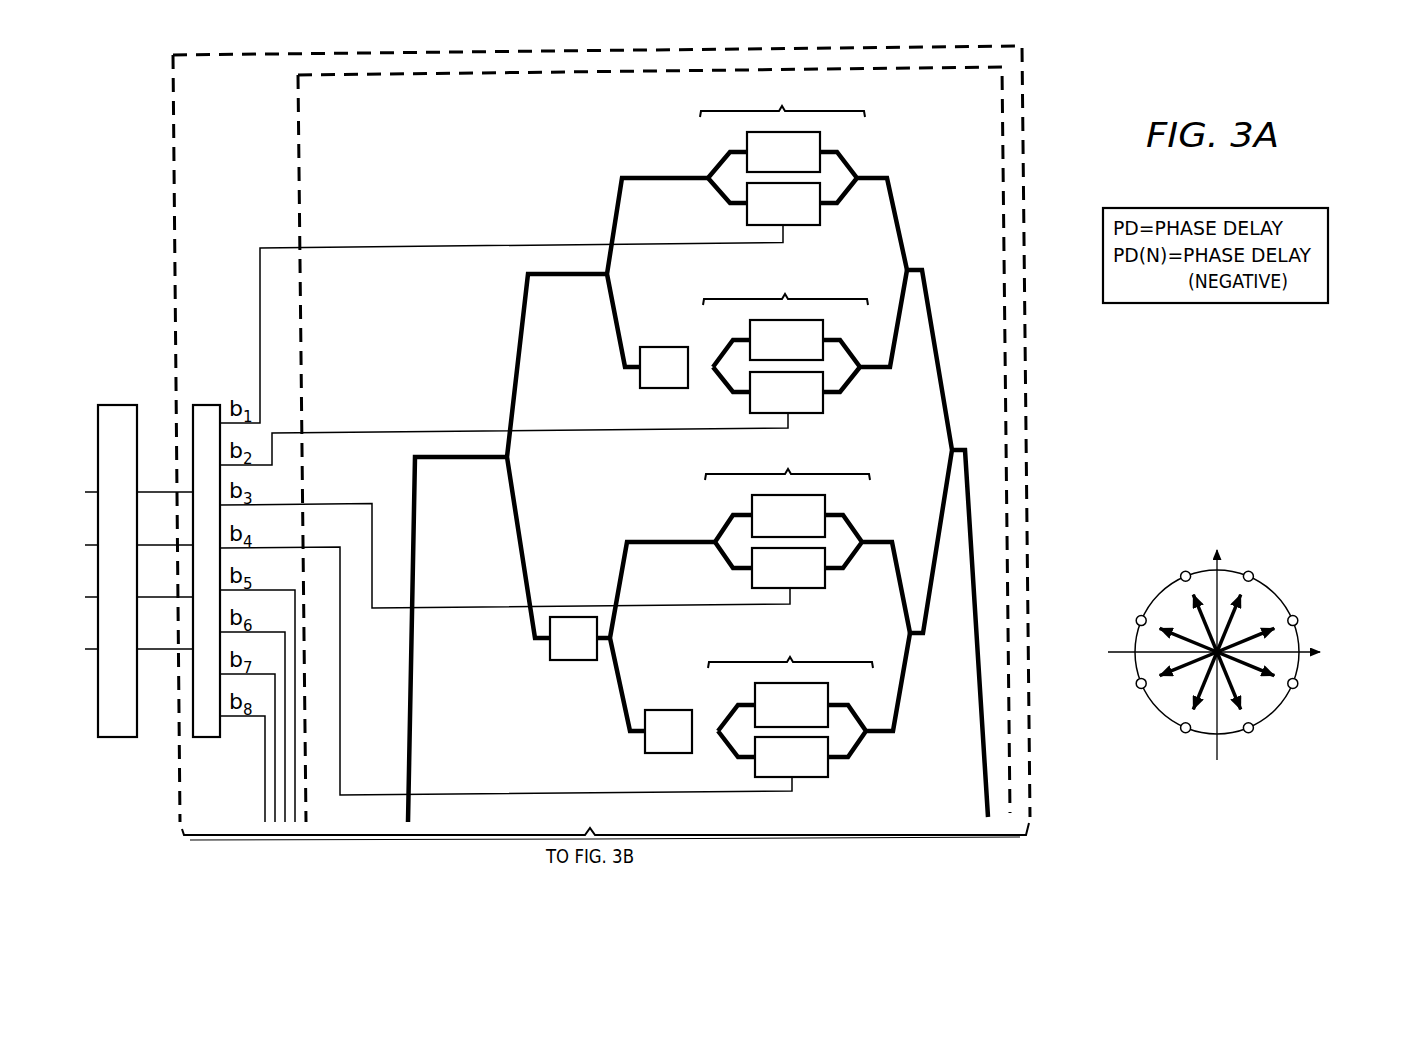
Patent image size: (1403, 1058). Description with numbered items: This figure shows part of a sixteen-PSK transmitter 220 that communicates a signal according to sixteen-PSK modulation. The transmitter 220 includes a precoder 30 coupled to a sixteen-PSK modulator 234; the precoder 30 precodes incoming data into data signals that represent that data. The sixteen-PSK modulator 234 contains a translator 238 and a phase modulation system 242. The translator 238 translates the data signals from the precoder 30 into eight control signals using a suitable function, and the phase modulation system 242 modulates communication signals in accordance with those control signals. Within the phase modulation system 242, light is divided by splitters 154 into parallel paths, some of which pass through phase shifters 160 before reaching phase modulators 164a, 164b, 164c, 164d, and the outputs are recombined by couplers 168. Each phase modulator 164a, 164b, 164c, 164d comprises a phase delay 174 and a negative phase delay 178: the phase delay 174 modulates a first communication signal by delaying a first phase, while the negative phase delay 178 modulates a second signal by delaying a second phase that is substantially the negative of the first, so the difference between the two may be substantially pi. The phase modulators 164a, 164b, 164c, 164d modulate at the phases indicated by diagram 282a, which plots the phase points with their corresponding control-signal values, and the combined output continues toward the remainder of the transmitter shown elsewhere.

The precoder 30 is at (118, 405).
The splitters 154 is at (514, 458).
The phase shifters 160 is at (575, 661).
The phase modulator 164a is at (782, 97).
The phase modulator 164b is at (785, 286).
The phase modulator 164c is at (787, 460).
The phase modulator 164d is at (790, 648).
The couplers 168 is at (860, 170).
The phase delay 174 is at (745, 139).
The negative phase delay 178 is at (820, 218).
The 16-PSK transmitter 220 is at (134, 101).
The 16-PSK modulator 234 is at (170, 189).
The translator 238 is at (207, 405).
The phase modulation system 242 is at (295, 180).
The diagram 282a is at (1326, 566).